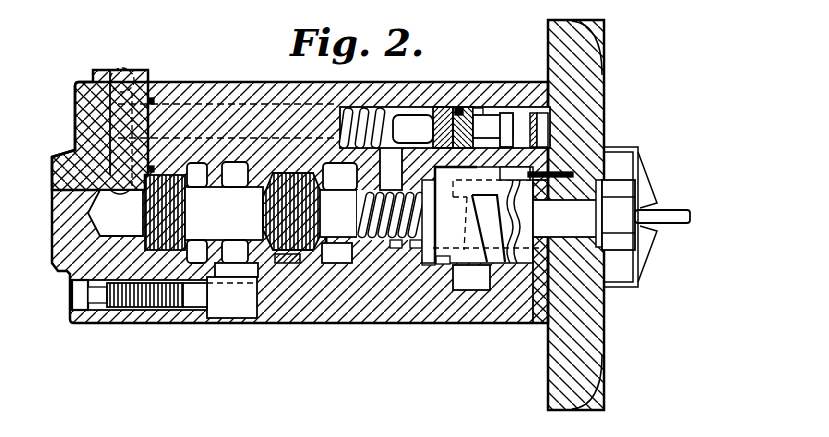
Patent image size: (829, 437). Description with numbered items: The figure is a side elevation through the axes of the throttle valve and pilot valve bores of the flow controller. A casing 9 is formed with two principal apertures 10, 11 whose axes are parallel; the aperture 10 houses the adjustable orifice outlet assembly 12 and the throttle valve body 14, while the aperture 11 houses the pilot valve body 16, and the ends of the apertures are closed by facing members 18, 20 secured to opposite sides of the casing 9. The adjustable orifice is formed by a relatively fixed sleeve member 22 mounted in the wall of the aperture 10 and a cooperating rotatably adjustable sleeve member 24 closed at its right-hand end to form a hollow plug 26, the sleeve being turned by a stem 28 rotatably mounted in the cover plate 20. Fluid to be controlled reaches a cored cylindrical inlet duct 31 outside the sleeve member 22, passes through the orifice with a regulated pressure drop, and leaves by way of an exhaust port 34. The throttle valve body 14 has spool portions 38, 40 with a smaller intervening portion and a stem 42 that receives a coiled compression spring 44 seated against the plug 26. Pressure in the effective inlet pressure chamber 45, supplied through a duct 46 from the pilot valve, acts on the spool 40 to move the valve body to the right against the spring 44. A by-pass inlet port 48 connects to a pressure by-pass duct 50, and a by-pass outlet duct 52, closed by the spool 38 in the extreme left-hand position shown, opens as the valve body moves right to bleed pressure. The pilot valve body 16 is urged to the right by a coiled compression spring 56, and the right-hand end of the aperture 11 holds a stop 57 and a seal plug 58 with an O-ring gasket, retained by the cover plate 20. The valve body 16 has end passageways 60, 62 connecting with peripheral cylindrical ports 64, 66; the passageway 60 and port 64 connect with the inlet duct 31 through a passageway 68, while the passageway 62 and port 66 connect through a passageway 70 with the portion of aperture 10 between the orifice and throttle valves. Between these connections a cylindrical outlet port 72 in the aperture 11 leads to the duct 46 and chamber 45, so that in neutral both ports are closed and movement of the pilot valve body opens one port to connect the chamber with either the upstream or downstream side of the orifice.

The casing 9 is at (202, 82).
The aperture 10 is at (368, 252).
The aperture 11 is at (503, 110).
The adjustable orifice outlet assembly 12 is at (424, 266).
The throttle valve body 14 is at (220, 232).
The pilot valve body 16 is at (447, 107).
The facing member 18 is at (80, 105).
The facing member 20 is at (592, 68).
The fixed sleeve member 22 is at (640, 150).
The rotatably adjustable sleeve member 24 is at (418, 246).
The hollow plug 26 is at (545, 242).
The stem 28 is at (611, 215).
The inlet duct 31 is at (470, 282).
The exhaust port 34 is at (338, 213).
The spool portion 38 is at (266, 300).
The spool portion 40 is at (165, 307).
The stem 42 is at (398, 244).
The coiled compression spring 44 is at (378, 240).
The effective inlet pressure chamber 45 is at (108, 213).
The duct 46 is at (170, 100).
The by-pass inlet port 48 is at (233, 312).
The pressure by-pass duct 50 is at (230, 165).
The by-pass outlet duct 52 is at (290, 263).
The coiled compression spring 56 is at (342, 123).
The stop 57 is at (515, 112).
The seal plug 58 is at (547, 133).
The passageway 60 is at (478, 108).
The passageway 62 is at (390, 112).
The cylindrical port 64 is at (458, 108).
The cylindrical port 66 is at (440, 110).
The passageway 68 is at (548, 156).
The passageway 70 is at (391, 166).
The cylindrical outlet port 72 is at (437, 150).